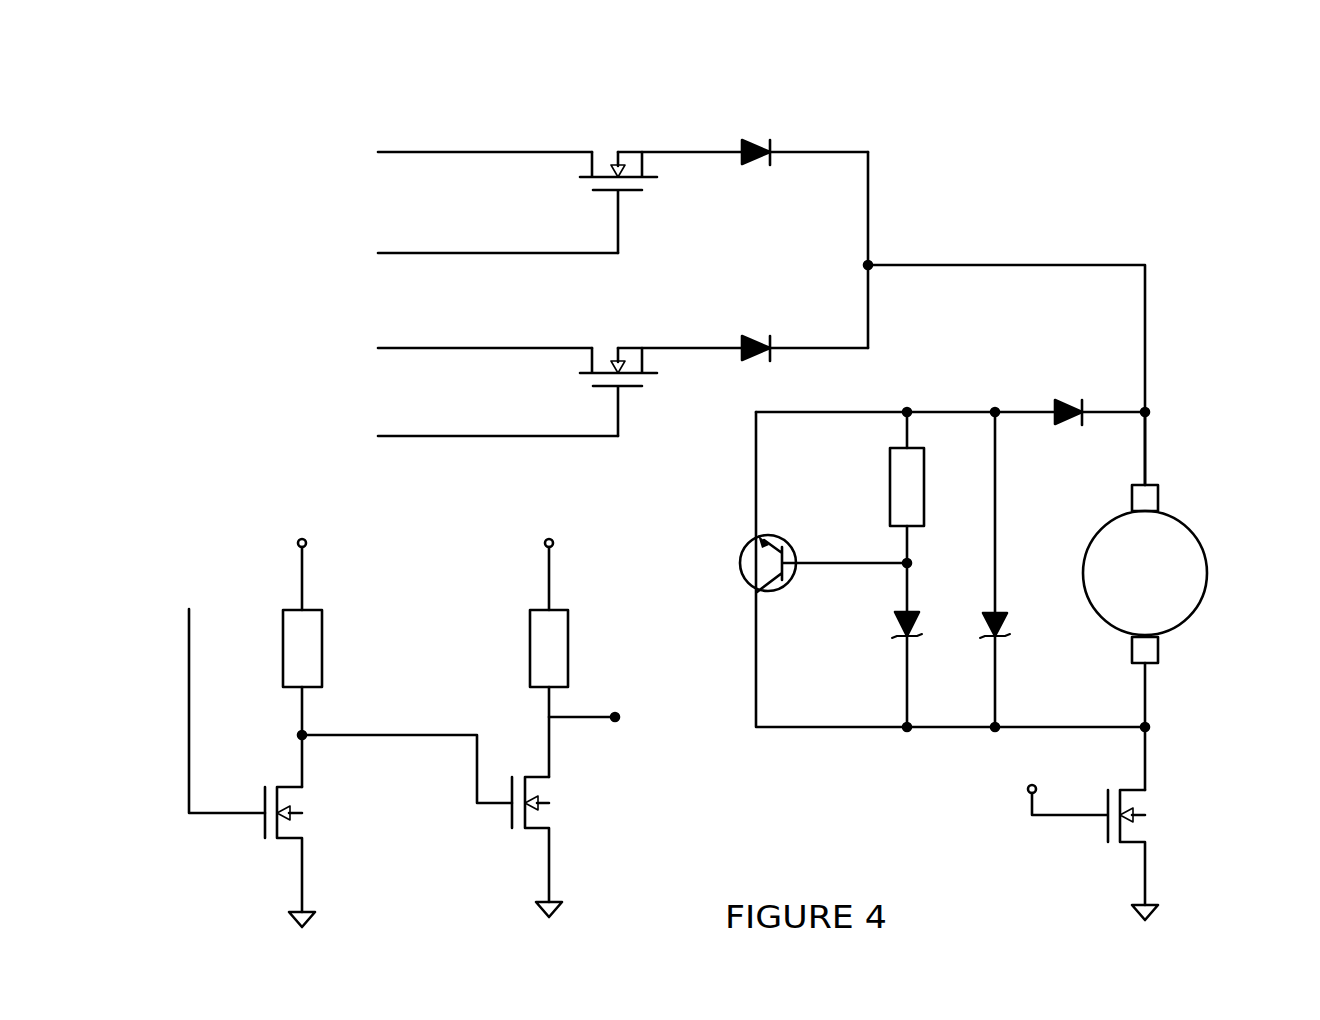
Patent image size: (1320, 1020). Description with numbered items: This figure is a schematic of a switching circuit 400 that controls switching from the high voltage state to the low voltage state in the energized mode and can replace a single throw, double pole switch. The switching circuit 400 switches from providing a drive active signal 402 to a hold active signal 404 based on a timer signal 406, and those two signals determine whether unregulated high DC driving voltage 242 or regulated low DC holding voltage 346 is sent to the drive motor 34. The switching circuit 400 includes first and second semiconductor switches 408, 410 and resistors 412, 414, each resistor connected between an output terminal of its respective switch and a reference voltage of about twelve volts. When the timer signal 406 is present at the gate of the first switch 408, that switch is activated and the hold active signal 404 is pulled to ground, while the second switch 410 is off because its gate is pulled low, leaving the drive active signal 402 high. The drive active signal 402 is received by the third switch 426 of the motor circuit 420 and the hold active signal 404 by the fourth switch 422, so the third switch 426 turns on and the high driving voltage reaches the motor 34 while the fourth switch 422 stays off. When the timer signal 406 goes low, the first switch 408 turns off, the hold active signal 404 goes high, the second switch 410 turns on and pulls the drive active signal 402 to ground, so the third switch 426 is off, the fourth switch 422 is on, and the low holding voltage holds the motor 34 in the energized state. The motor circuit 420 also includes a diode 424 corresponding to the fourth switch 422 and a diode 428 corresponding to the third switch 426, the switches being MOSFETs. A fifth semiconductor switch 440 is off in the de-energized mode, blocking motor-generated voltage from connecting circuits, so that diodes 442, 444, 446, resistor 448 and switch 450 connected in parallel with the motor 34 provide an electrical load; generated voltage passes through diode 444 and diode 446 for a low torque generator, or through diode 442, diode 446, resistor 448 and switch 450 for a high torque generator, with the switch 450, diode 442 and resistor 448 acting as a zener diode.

The drive motor 34 is at (1208, 567).
The unregulated high DC driving voltage 242 is at (430, 350).
The regulated low DC holding voltage 346 is at (457, 154).
The switching circuit 400 is at (448, 532).
The drive active signal 402 is at (447, 438).
The hold active signal 404 is at (455, 255).
The timer signal 406 is at (165, 665).
The first semiconductor switch 408 is at (298, 798).
The second semiconductor switch 410 is at (549, 790).
The resistor 412 is at (321, 610).
The resistor 414 is at (567, 610).
The motor circuit 420 is at (992, 116).
The fourth semiconductor switch 422 is at (606, 143).
The diode 424 is at (776, 151).
The third semiconductor switch 426 is at (606, 358).
The diode 428 is at (775, 346).
The fifth semiconductor switch 440 is at (1155, 802).
The diode 442 is at (904, 640).
The diode 444 is at (1003, 612).
The diode 446 is at (1082, 408).
The resistor 448 is at (922, 448).
The switch 450 is at (750, 583).